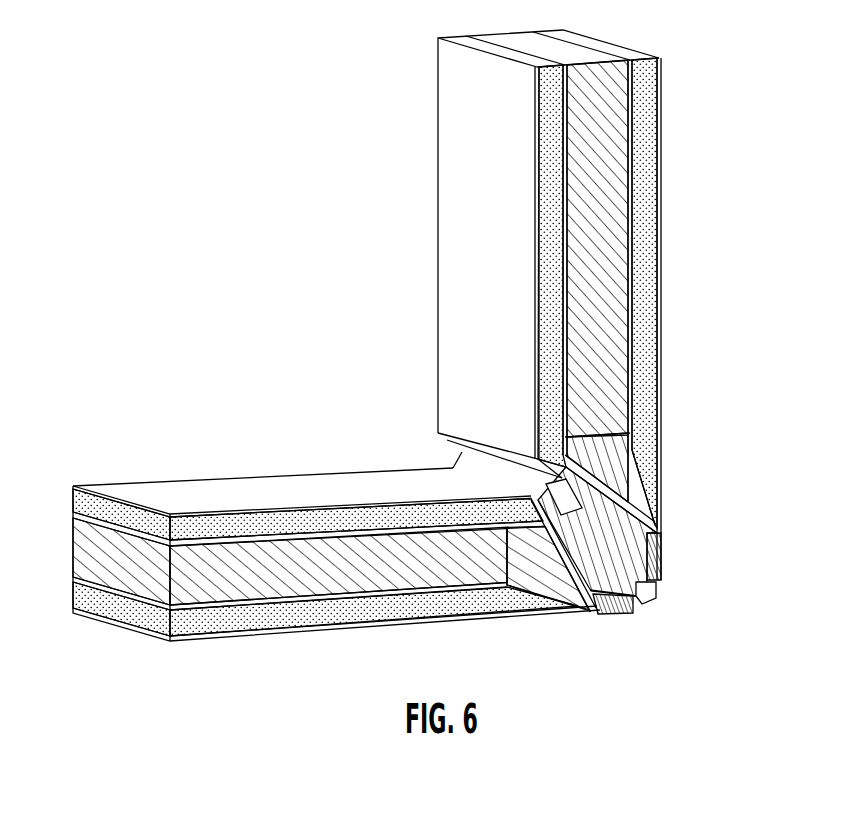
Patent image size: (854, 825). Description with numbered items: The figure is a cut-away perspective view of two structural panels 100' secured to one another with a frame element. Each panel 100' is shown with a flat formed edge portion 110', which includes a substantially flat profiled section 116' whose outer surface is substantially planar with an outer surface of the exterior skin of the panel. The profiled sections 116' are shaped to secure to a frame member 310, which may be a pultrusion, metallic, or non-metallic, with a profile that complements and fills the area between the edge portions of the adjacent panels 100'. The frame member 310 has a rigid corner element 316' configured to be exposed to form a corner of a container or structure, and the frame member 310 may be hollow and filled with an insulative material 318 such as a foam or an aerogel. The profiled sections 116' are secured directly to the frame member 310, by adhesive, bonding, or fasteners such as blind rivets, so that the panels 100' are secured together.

The panel 100' is at (409, 375).
The flat formed edge portion 110' is at (412, 378).
The profiled section 116' is at (660, 603).
The rigid corner element 316' is at (680, 603).
The frame member 310 is at (647, 629).
The insulative material 318 is at (462, 452).